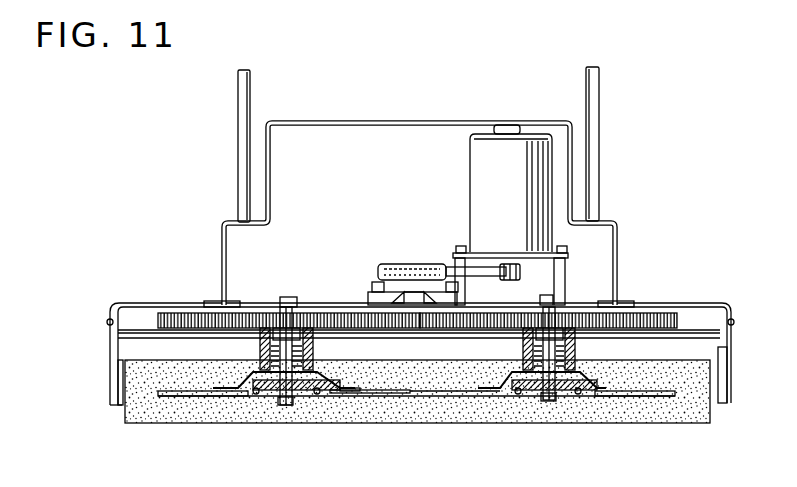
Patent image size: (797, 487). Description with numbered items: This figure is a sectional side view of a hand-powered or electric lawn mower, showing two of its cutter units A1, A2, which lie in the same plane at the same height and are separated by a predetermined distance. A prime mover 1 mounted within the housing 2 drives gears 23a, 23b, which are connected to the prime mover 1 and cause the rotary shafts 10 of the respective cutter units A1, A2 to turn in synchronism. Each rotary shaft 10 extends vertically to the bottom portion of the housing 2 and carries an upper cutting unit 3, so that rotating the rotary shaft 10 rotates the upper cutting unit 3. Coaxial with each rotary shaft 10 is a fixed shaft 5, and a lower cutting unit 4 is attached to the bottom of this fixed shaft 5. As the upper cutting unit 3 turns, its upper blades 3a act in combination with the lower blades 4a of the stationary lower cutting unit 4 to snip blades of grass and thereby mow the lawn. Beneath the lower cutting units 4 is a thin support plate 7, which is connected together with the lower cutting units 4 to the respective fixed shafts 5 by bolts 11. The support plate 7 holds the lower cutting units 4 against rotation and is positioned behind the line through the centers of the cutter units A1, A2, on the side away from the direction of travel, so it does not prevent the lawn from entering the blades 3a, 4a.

The prime mover 1 is at (478, 172).
The housing 2 is at (390, 121).
The upper cutting unit 3 is at (245, 386).
The upper blade 3a is at (341, 392).
The lower cutting unit 4 is at (243, 400).
The lower blade 4a is at (375, 397).
The fixed shaft 5 is at (262, 353).
The support plate 7 is at (417, 397).
The rotary shaft 10 is at (313, 347).
The bolt 11 is at (287, 402).
The gear 23a is at (248, 318).
The gear 23b is at (655, 318).
The cutter unit A1 is at (267, 404).
The cutter unit A2 is at (580, 404).